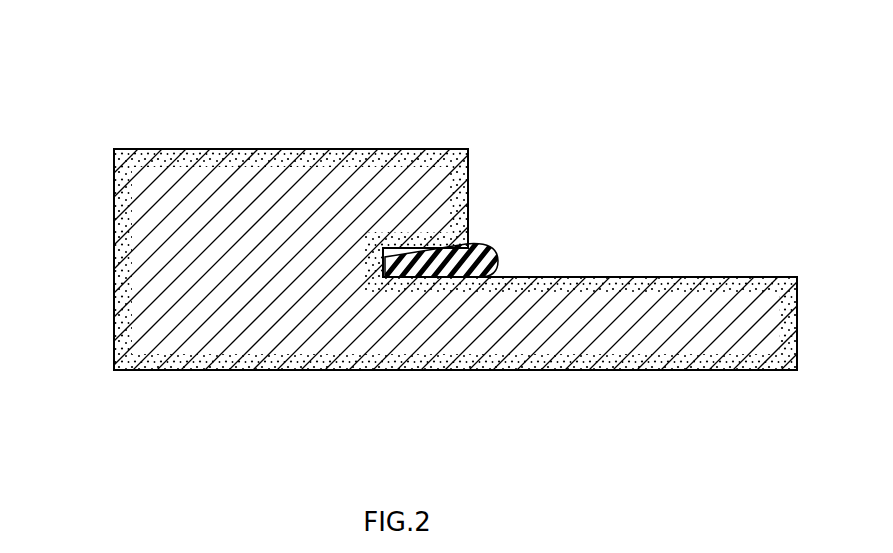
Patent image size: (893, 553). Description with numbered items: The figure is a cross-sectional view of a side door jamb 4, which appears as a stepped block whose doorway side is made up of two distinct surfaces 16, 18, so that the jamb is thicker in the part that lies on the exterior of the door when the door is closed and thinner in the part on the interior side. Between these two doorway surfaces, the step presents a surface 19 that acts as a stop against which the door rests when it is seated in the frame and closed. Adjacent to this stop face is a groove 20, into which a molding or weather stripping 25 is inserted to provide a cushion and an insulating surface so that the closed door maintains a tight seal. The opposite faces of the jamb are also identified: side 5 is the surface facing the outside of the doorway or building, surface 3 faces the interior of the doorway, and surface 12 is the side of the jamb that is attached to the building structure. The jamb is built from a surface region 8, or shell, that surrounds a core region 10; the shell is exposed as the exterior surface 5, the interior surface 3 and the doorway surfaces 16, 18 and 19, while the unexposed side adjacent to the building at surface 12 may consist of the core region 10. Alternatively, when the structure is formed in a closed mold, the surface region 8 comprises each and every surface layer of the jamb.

The side door jamb 4 is at (640, 90).
The surface region 8 is at (135, 149).
The doorway surface 18 is at (395, 149).
The stop surface 19 is at (470, 181).
The exterior side surface 5 is at (114, 271).
The molding or weather stripping 25 is at (497, 250).
The groove 20 is at (392, 278).
The doorway surface 16 is at (650, 278).
The interior side surface 3 is at (798, 314).
The core region 10 is at (343, 340).
The building-attachment surface 12 is at (584, 369).